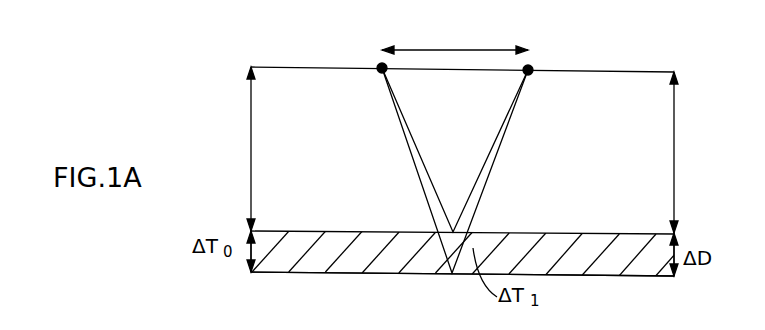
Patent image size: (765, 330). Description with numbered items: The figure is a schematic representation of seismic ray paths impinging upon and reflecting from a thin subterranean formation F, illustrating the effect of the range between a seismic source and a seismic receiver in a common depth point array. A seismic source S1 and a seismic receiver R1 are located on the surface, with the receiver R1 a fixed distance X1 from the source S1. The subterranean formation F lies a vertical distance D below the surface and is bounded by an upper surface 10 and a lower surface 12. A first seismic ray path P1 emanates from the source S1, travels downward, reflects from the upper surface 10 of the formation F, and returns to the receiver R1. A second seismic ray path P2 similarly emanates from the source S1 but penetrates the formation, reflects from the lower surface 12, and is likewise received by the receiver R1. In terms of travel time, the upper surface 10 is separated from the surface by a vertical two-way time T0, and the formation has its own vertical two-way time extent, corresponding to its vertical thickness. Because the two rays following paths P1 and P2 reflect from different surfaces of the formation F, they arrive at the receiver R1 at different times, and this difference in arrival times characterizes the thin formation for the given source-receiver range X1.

The upper surface 10 is at (283, 231).
The lower surface 12 is at (312, 273).
The subterranean formation F is at (643, 275).
The seismic source S1 is at (373, 54).
The seismic receiver R1 is at (542, 56).
The fixed distance X1 is at (455, 36).
The seismic ray path P1 is at (408, 128).
The second seismic ray path P2 is at (414, 167).
The vertical two-way time separation T0 is at (233, 149).
The vertical distance D is at (686, 152).